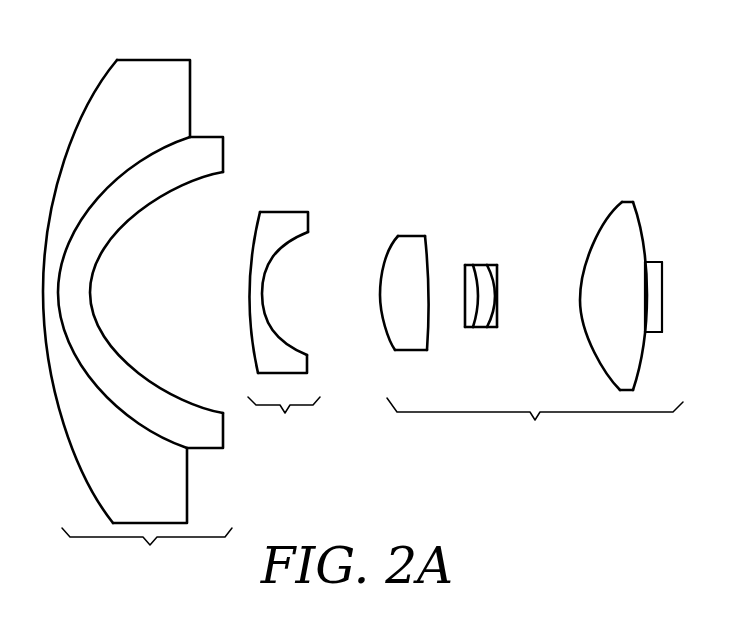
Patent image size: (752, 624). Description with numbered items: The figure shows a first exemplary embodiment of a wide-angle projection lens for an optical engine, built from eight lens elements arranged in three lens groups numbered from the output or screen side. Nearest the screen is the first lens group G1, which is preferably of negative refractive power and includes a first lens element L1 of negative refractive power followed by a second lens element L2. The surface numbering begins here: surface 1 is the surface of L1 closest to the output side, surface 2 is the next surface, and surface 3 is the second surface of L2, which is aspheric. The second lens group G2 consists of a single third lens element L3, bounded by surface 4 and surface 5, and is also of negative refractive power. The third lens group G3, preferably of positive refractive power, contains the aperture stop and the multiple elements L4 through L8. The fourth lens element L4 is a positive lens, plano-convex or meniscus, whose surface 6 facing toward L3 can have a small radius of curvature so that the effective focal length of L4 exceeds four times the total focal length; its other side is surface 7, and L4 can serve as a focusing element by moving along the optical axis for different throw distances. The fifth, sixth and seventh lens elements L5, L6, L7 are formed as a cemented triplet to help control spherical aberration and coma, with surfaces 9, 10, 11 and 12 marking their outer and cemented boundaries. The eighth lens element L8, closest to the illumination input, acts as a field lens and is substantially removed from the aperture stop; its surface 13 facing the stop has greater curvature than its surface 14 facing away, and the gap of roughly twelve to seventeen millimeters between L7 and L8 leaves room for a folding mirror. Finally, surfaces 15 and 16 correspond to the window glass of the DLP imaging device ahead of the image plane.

The surface 1 is at (97, 90).
The surface 2 is at (137, 157).
The surface 3 is at (120, 232).
The surface 4 is at (258, 215).
The surface 5 is at (280, 255).
The surface 6 is at (388, 258).
The surface 7 is at (428, 350).
The surface 9 is at (465, 323).
The surface 10 is at (477, 328).
The surface 11 is at (491, 298).
The surface 12 is at (505, 276).
The surface 13 is at (604, 222).
The surface 14 is at (640, 215).
The surface 15 is at (643, 305).
The surface 16 is at (663, 290).
The first lens element L1 is at (116, 266).
The second lens element L2 is at (163, 266).
The third lens element L3 is at (273, 266).
The fourth lens element L4 is at (399, 289).
The fifth lens element L5 is at (467, 306).
The sixth lens element L6 is at (511, 253).
The seventh lens element L7 is at (519, 269).
The eighth lens element L8 is at (625, 274).
The first lens group G1 is at (139, 293).
The second lens group G2 is at (278, 304).
The third lens group G3 is at (543, 304).